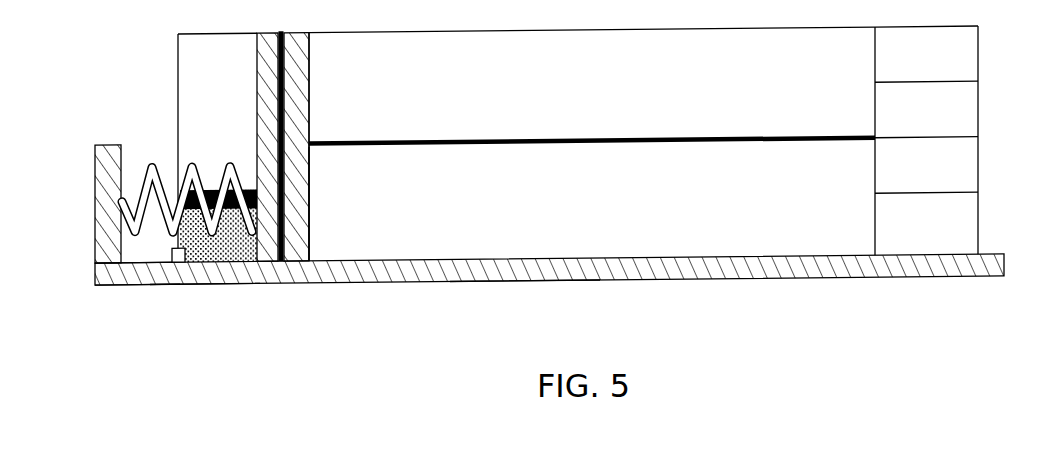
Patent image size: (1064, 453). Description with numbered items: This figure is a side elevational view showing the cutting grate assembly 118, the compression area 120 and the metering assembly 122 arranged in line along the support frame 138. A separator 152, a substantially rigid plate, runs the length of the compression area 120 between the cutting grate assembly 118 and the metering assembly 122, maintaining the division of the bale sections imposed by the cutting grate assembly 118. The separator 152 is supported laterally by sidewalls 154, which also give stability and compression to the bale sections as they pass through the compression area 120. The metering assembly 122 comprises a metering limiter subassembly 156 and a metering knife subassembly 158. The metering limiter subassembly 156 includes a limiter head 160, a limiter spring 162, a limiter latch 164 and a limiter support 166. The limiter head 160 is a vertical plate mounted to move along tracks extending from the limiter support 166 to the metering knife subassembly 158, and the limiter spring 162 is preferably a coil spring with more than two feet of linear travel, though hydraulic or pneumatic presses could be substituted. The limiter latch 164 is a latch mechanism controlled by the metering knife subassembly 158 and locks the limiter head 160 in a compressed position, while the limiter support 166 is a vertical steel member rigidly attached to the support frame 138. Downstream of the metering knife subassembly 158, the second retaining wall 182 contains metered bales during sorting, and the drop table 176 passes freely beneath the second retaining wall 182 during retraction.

The cutting grate assembly 118 is at (1002, 167).
The compression area 120 is at (697, 299).
The metering assembly 122 is at (193, 309).
The support frame 138 is at (523, 299).
The separator 152 is at (650, 140).
The sidewalls 154 is at (610, 216).
The metering limiter subassembly 156 is at (66, 237).
The metering knife subassembly 158 is at (324, 233).
The limiter head 160 is at (307, 98).
The limiter spring 162 is at (168, 198).
The limiter latch 164 is at (176, 283).
The limiter support 166 is at (100, 184).
The drop table 176 is at (208, 194).
The second retaining wall 182 is at (235, 95).